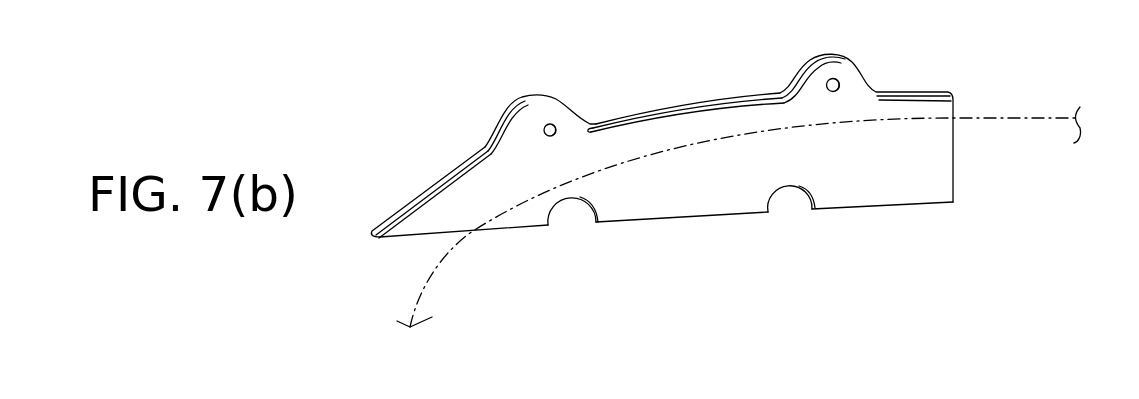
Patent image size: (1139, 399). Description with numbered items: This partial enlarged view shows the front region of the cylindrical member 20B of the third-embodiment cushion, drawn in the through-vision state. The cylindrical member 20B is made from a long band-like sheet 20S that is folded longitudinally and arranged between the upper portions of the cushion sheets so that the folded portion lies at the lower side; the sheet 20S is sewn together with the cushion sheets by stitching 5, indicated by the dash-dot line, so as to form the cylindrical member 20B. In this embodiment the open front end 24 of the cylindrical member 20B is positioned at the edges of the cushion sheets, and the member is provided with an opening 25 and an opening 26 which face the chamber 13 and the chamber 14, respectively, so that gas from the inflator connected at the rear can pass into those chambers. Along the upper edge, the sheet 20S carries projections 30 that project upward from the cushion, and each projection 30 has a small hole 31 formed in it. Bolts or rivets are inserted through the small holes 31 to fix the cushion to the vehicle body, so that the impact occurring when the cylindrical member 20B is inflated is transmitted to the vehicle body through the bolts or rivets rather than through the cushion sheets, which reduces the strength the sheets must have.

The stitching 5 is at (1000, 117).
The chamber 13 is at (402, 10).
The chamber 14 is at (282, 15).
The cylindrical member 20B is at (671, 91).
The band-like sheet 20S is at (707, 197).
The front end 24 is at (422, 191).
The opening 25 is at (788, 207).
The opening 26 is at (570, 217).
The projection 30 is at (521, 97).
The small hole 31 is at (553, 123).